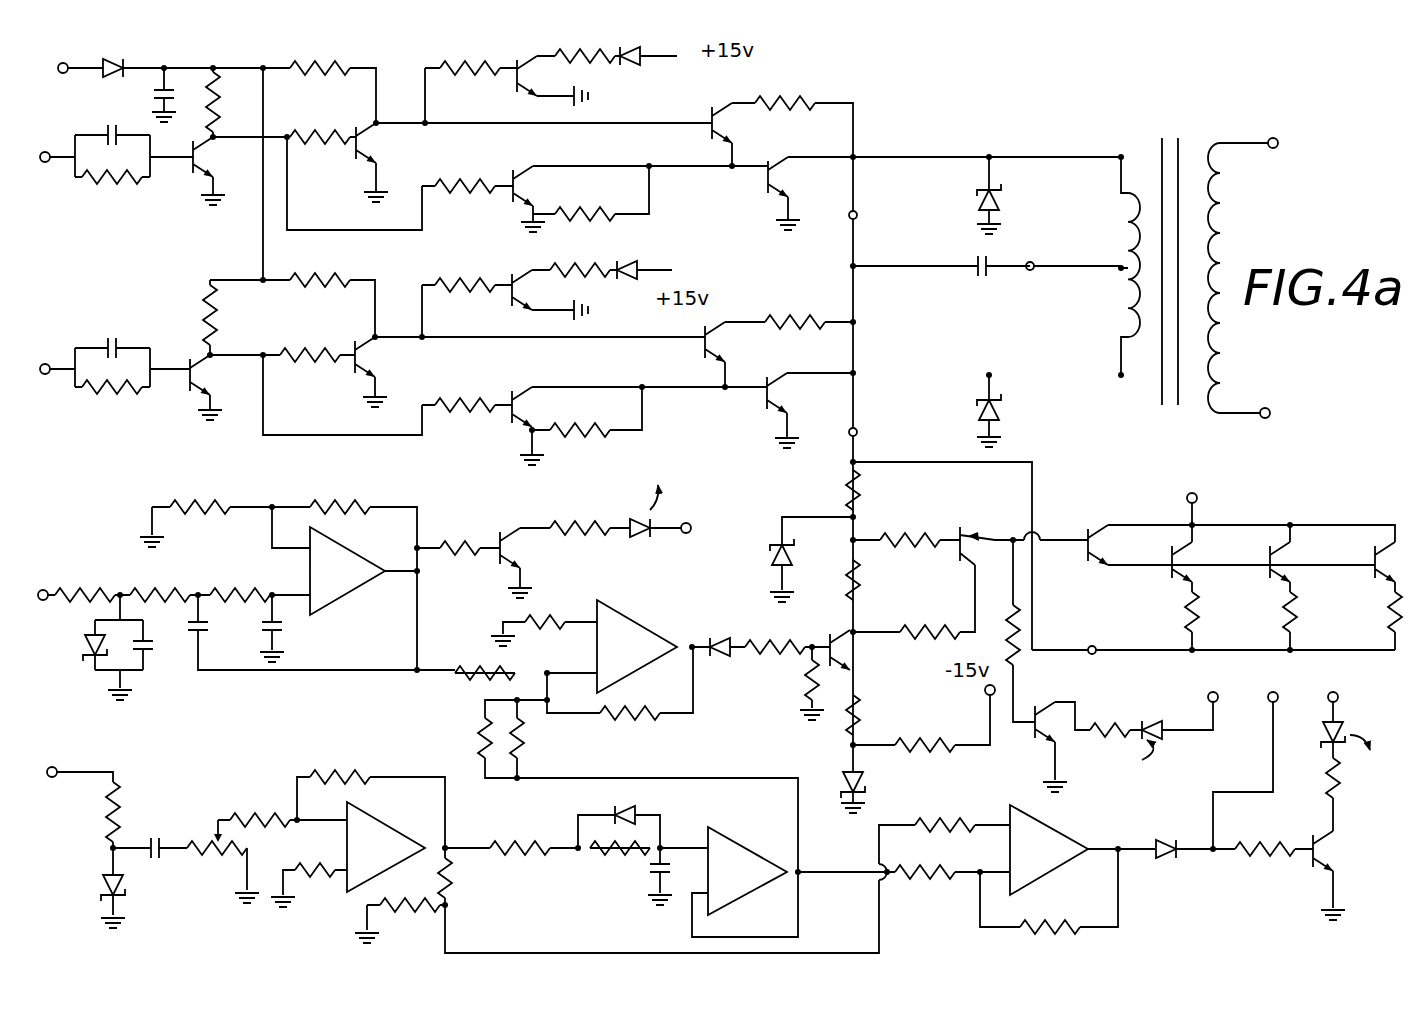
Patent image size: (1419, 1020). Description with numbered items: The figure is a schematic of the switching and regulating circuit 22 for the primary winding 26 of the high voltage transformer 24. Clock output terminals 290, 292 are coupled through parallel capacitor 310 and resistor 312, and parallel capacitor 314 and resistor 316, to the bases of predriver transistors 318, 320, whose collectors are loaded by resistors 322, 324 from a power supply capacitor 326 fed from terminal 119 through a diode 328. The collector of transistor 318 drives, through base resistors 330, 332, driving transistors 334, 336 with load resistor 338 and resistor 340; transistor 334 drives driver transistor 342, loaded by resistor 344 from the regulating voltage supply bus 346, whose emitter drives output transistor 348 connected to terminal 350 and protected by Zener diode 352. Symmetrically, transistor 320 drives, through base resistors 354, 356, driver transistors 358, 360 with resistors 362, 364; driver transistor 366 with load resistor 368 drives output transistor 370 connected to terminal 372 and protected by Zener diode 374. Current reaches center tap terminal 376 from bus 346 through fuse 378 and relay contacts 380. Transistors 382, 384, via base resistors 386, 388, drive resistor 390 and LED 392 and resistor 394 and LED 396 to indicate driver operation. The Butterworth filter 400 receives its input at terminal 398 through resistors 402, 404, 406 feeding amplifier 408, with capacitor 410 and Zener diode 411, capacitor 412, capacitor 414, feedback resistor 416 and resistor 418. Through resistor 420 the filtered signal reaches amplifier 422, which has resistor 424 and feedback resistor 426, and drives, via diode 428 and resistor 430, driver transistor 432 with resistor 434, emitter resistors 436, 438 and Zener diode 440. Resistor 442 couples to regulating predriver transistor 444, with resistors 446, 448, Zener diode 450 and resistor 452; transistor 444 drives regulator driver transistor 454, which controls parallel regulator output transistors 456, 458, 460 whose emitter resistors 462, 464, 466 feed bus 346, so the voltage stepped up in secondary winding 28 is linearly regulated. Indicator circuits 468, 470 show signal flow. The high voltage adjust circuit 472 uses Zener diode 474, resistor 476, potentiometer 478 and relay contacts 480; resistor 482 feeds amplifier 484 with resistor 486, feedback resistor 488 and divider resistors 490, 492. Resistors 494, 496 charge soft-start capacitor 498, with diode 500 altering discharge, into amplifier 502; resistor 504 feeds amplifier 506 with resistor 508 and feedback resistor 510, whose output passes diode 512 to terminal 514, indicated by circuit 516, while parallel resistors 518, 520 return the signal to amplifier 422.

The switching and regulating circuit 22 is at (997, 116).
The high voltage transformer 24 is at (1178, 452).
The primary winding 26 is at (1105, 298).
The secondary winding 28 is at (1252, 222).
The direct current voltage supply terminal 119 is at (62, 78).
The clock output terminal 290 is at (46, 164).
The clock output terminal 292 is at (45, 364).
The capacitor 310 is at (112, 128).
The resistor 312 is at (120, 179).
The capacitor 314 is at (112, 344).
The resistor 316 is at (112, 389).
The predriver transistor 318 is at (188, 180).
The predriver transistor 320 is at (183, 388).
The load resistor 322 is at (225, 90).
The load resistor 324 is at (216, 320).
The power supply capacitor 326 is at (163, 92).
The diode 328 is at (113, 60).
The base resistor 330 is at (322, 130).
The base resistor 332 is at (468, 184).
The driving transistor 334 is at (372, 150).
The driving transistor 336 is at (540, 186).
The load resistor 338 is at (330, 77).
The resistor 340 is at (605, 216).
The driver transistor 342 is at (702, 132).
The load resistor 344 is at (780, 102).
The regulating voltage supply bus 346 is at (857, 215).
The output transistor 348 is at (765, 183).
The terminal 350 is at (1120, 155).
The transient-suppressing Zener diode 352 is at (1012, 215).
The base resistor 354 is at (312, 352).
The base resistor 356 is at (462, 402).
The driver transistor 358 is at (373, 358).
The driver transistor 360 is at (505, 420).
The load resistor 362 is at (320, 278).
The resistor 364 is at (580, 430).
The driver transistor 366 is at (695, 348).
The load resistor 368 is at (790, 320).
The output transistor 370 is at (757, 405).
The terminal 372 is at (1121, 377).
The transient-suppressing Zener diode 374 is at (975, 406).
The center tap terminal 376 is at (1121, 266).
The protecting fuse 378 is at (1080, 268).
The normally open relay contacts 380 is at (978, 258).
The transistor 382 is at (510, 85).
The transistor 384 is at (520, 267).
The base resistor 386 is at (433, 62).
The base resistor 388 is at (447, 256).
The series resistor 390 is at (567, 64).
The LED 392 is at (638, 62).
The series resistor 394 is at (600, 245).
The LED 396 is at (638, 267).
The terminal 398 is at (43, 590).
The filter 400 is at (285, 495).
The resistor 402 is at (93, 590).
The resistor 404 is at (165, 591).
The resistor 406 is at (243, 590).
The operational amplifier 408 is at (370, 608).
The capacitor 410 is at (148, 643).
The Zener diode 411 is at (86, 652).
The capacitor 412 is at (285, 624).
The capacitor 414 is at (233, 625).
The feedback resistor 416 is at (377, 500).
The resistor 418 is at (203, 505).
The resistor 420 is at (455, 676).
The amplifier 422 is at (638, 620).
The resistor 424 is at (530, 615).
The feedback resistor 426 is at (635, 717).
The diode 428 is at (718, 638).
The series resistor 430 is at (777, 635).
The driver transistor 432 is at (862, 652).
The resistor 434 is at (805, 672).
The series resistor 436 is at (860, 705).
The series resistor 438 is at (908, 747).
The Zener diode 440 is at (845, 774).
The resistor 442 is at (937, 631).
The regulating predriver transistor 444 is at (985, 530).
The resistor 446 is at (898, 535).
The resistor 448 is at (855, 582).
The Zener diode 450 is at (770, 555).
The resistor 452 is at (850, 481).
The regulator driver transistor 454 is at (1105, 495).
The regulator output transistor 456 is at (1160, 570).
The regulator output transistor 458 is at (1258, 572).
The regulator output transistor 460 is at (1365, 572).
The series resistor 462 is at (1185, 612).
The series resistor 464 is at (1285, 612).
The series resistor 466 is at (1390, 612).
The indicator circuit 468 is at (568, 563).
The indicator circuit 470 is at (1154, 713).
The high voltage adjust circuit 472 is at (280, 730).
The Zener diode 474 is at (123, 903).
The series resistor 476 is at (115, 798).
The high voltage adjustment potentiometer 478 is at (216, 832).
The normally open relay contacts 480 is at (156, 858).
The series resistor 482 is at (265, 815).
The amplifier 484 is at (418, 800).
The resistor 486 is at (324, 888).
The feedback resistor 488 is at (345, 775).
The series resistor 490 is at (450, 878).
The series resistor 492 is at (440, 914).
The time constant-determining resistor 494 is at (520, 842).
The time constant-determining resistor 496 is at (620, 853).
The soft-start capacitor 498 is at (650, 870).
The diode 500 is at (633, 810).
The amplifier 502 is at (780, 805).
The series resistor 504 is at (942, 875).
The amplifier 506 is at (1057, 828).
The series resistor 508 is at (947, 820).
The feedback resistor 510 is at (1040, 925).
The diode 512 is at (1165, 860).
The terminal 514 is at (1276, 695).
The indicator circuit 516 is at (1338, 848).
The resistor 518 is at (480, 742).
The resistor 520 is at (525, 740).